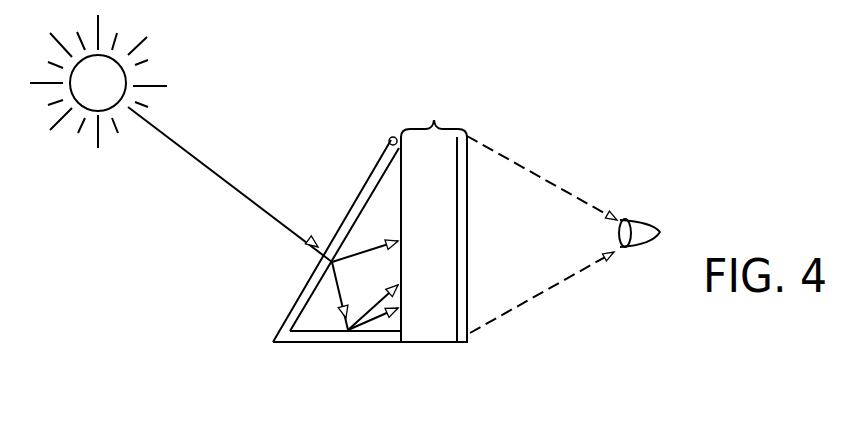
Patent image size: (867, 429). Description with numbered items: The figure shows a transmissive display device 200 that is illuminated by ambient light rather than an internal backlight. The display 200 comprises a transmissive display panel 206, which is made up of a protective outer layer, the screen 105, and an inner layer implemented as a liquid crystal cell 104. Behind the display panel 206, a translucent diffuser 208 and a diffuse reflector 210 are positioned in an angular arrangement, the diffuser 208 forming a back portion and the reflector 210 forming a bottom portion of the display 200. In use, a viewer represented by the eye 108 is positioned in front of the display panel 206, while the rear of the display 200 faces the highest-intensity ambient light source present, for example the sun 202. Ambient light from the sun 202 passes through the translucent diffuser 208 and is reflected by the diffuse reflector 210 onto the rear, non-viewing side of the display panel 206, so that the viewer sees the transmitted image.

The liquid crystal cell 104 is at (432, 332).
The screen 105 is at (468, 317).
The eye 108 is at (632, 216).
The transmissive display device 200 is at (305, 133).
The sun 202 is at (90, 112).
The transmissive display panel 206 is at (434, 214).
The translucent diffuser 208 is at (288, 322).
The diffuse reflector 210 is at (323, 343).